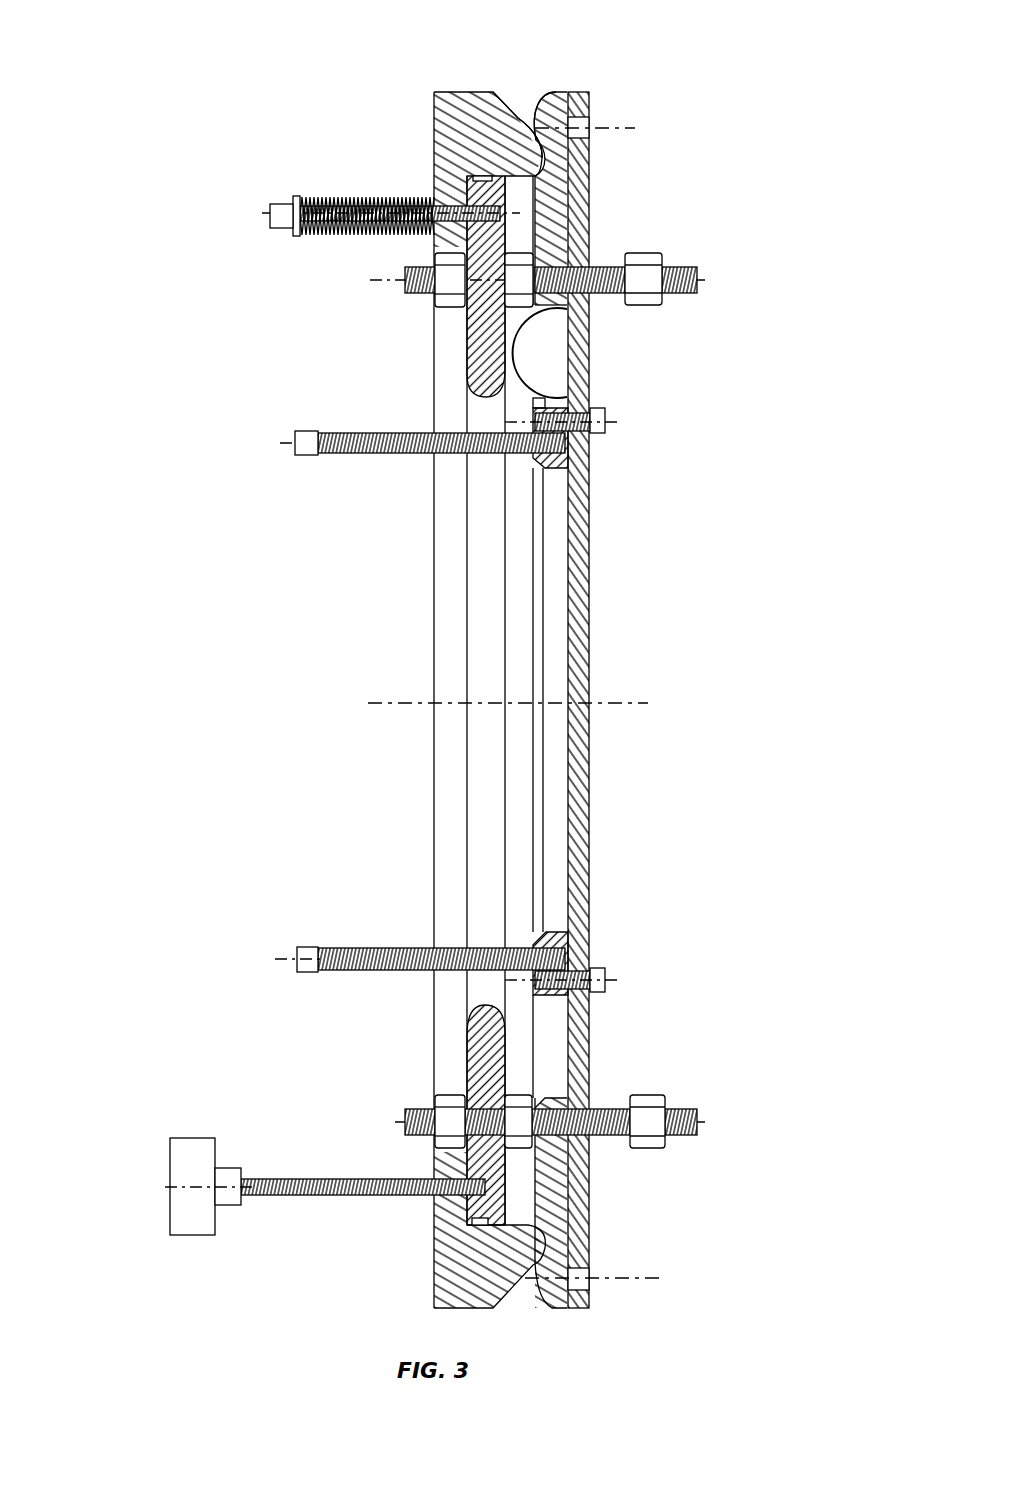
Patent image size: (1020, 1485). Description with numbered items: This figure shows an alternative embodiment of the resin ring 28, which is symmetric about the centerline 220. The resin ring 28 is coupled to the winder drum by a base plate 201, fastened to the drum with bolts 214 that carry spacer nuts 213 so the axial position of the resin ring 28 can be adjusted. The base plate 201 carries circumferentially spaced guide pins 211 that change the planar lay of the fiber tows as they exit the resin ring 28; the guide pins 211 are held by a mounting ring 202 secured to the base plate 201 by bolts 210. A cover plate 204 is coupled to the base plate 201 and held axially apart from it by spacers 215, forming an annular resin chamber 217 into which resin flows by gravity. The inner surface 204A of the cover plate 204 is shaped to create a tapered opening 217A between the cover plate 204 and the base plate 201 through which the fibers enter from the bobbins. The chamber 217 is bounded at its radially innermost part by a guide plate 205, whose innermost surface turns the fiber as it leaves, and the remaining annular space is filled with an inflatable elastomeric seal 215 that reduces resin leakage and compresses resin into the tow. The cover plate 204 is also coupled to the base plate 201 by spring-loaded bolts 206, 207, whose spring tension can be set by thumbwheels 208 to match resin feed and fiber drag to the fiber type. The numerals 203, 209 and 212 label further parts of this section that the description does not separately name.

The resin ring 28 is at (226, 538).
The base plate 201 is at (590, 608).
The mounting ring 202 is at (563, 467).
The support bar 203 is at (550, 255).
The cover plate 204 is at (433, 148).
The inner surface of the cover plate 204A is at (502, 100).
The guide plate 205 is at (463, 362).
The spring-loaded bolt 206 is at (298, 200).
The spring-loaded bolt 207 is at (270, 212).
The thumbwheel 208 is at (170, 1187).
The spring-loaded screw 209 is at (407, 205).
The bolt 210 is at (607, 424).
The guide pin 211 is at (297, 440).
The bolt 212 is at (408, 438).
The spacer nut 213 is at (647, 305).
The bolt 214 is at (702, 280).
The spacer / elastomeric seal 215 is at (538, 308).
The annular resin chamber 217 is at (519, 240).
The tapered opening 217A is at (523, 105).
The centerline 220 is at (655, 702).